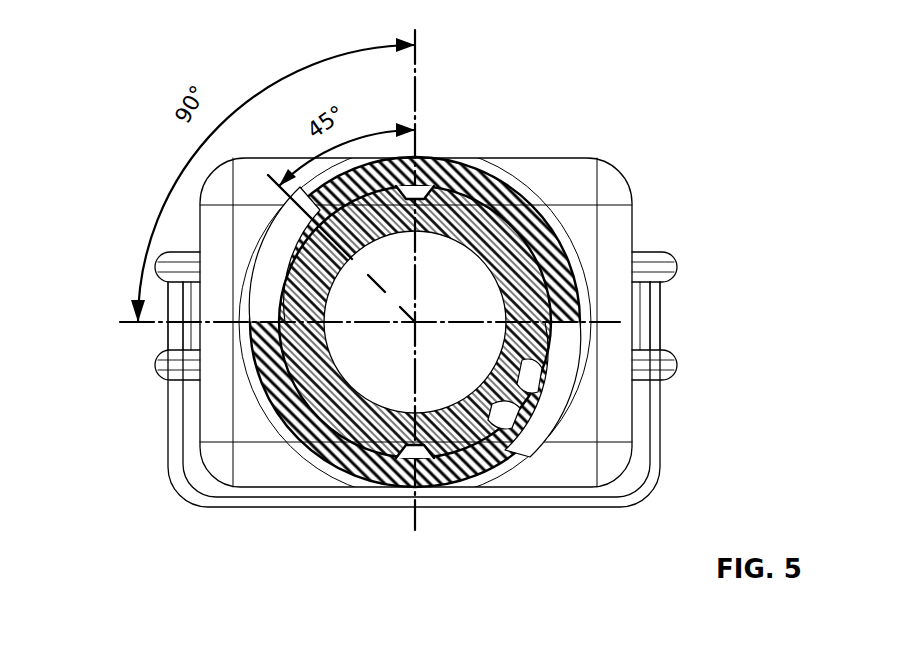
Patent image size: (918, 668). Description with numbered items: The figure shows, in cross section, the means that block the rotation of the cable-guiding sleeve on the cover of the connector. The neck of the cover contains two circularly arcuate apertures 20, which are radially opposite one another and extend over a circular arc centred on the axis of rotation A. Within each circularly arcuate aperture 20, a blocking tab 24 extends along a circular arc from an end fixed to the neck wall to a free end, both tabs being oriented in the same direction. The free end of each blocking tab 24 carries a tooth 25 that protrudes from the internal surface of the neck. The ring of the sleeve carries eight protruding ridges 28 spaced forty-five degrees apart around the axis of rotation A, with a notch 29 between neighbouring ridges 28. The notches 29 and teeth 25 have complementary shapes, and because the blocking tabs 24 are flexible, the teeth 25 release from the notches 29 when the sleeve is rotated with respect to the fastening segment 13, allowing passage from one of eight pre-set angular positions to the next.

The fastening segment 13 is at (568, 185).
The axis of rotation A is at (415, 322).
The circularly arcuate aperture 20 is at (362, 470).
The blocking tab 24 is at (472, 470).
The tooth 25 is at (420, 458).
The protruding ridge 28 is at (527, 380).
The notch 29 is at (508, 414).